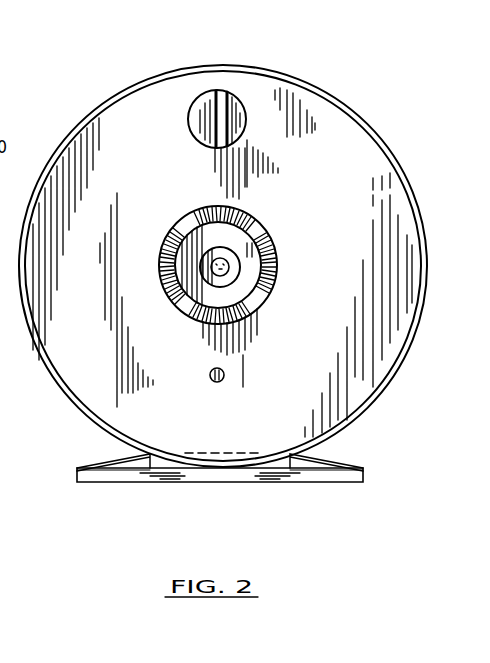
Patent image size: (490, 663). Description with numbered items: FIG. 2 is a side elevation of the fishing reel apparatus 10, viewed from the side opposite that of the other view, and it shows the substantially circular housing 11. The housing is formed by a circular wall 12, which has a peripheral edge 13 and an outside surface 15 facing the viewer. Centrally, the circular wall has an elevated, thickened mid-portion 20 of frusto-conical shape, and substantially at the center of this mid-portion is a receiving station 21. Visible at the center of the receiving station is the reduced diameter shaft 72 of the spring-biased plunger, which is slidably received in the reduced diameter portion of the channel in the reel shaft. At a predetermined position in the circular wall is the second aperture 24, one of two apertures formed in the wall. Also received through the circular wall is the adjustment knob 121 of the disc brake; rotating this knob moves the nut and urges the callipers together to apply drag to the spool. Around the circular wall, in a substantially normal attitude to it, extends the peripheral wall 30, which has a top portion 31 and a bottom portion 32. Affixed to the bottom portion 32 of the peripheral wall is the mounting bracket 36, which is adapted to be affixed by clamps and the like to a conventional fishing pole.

The apparatus 10 is at (326, 88).
The housing 11 is at (377, 118).
The circular wall 12 is at (117, 150).
The peripheral edge 13 is at (155, 78).
The outside surface 15 is at (338, 362).
The thickened mid-portion 20 is at (271, 231).
The receiving station 21 is at (217, 247).
The second aperture 24 is at (224, 376).
The peripheral wall 30 is at (345, 430).
The top portion 31 is at (230, 64).
The bottom portion 32 is at (199, 468).
The mounting bracket 36 is at (266, 470).
The reduced diameter shaft 72 is at (230, 268).
The adjustment knob 121 is at (200, 130).